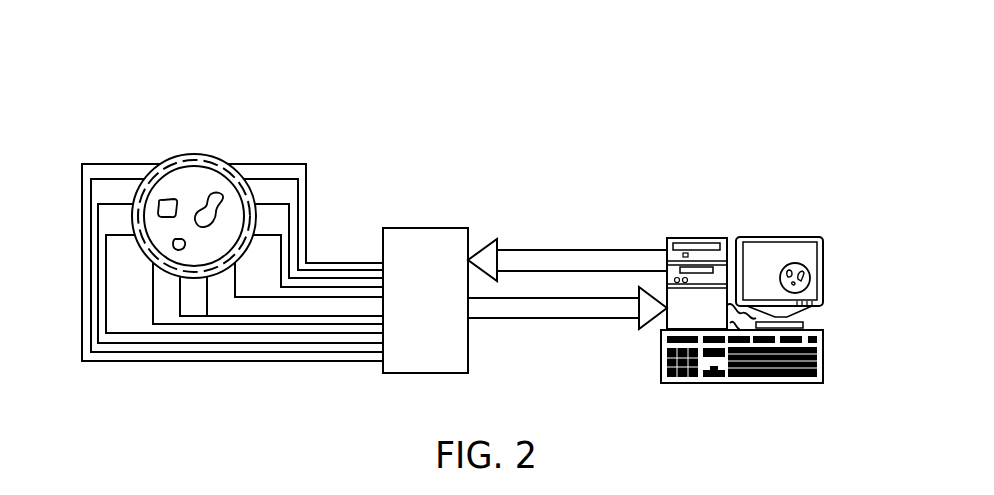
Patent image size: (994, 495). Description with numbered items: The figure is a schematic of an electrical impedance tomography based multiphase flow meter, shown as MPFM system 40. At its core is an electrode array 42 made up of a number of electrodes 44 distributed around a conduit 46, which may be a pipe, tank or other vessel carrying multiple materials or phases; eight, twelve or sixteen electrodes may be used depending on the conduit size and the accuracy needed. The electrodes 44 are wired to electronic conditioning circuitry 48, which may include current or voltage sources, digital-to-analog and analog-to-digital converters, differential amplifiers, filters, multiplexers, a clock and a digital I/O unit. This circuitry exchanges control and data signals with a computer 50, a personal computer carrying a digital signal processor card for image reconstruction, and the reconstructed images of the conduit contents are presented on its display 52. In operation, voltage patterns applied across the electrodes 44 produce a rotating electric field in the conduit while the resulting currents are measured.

The MPFM system 40 is at (725, 43).
The electrode array 42 is at (256, 364).
The electrodes 44 is at (225, 168).
The conduit 46 is at (246, 191).
The electronic conditioning circuitry 48 is at (427, 227).
The computer 50 is at (700, 237).
The display 52 is at (773, 277).